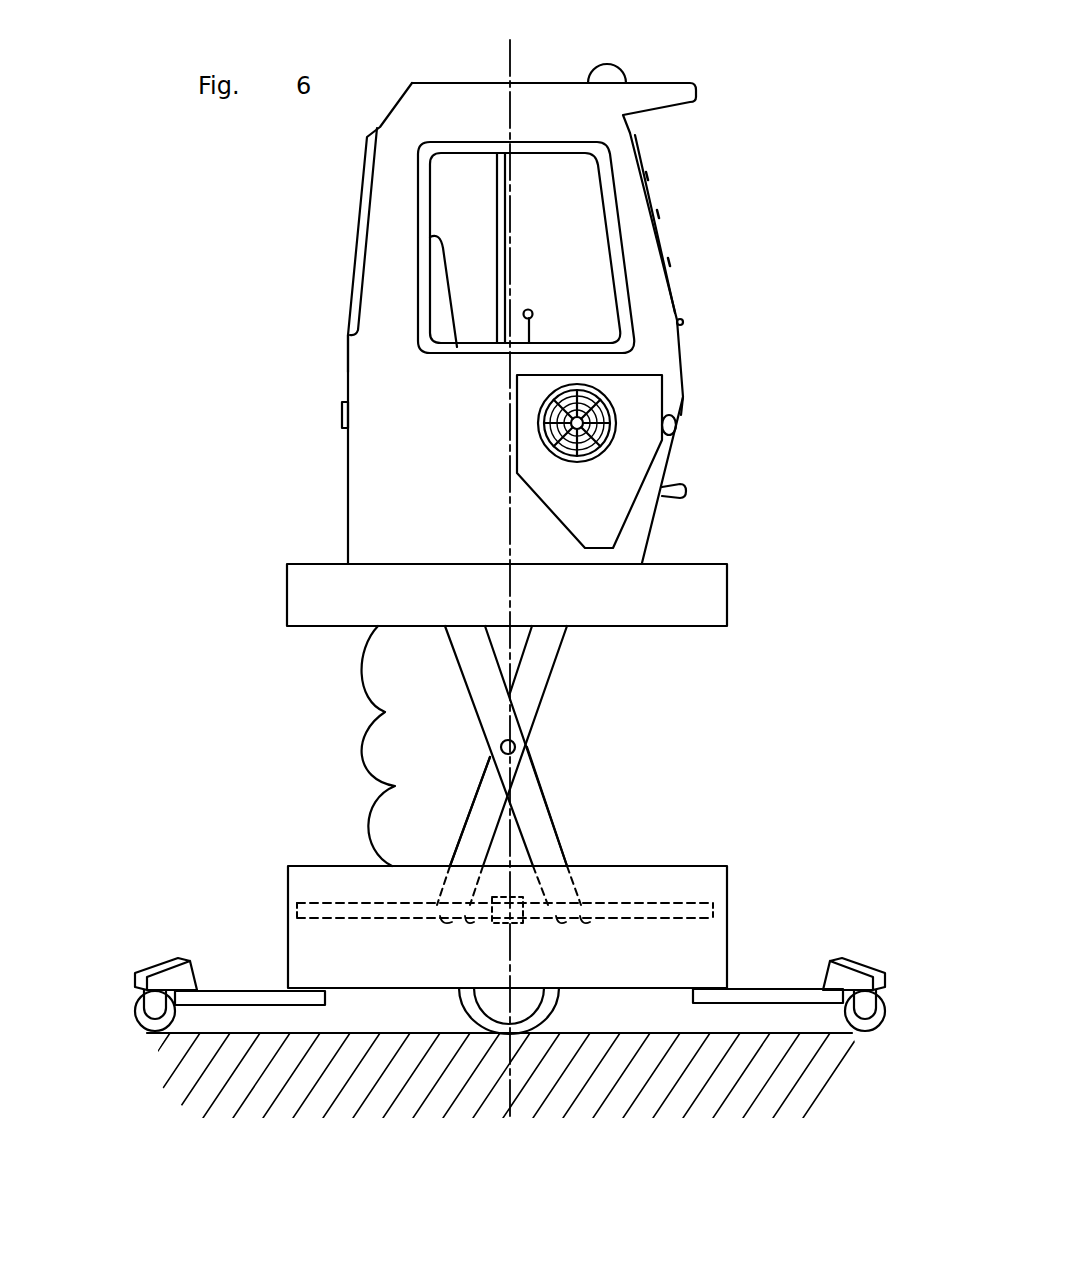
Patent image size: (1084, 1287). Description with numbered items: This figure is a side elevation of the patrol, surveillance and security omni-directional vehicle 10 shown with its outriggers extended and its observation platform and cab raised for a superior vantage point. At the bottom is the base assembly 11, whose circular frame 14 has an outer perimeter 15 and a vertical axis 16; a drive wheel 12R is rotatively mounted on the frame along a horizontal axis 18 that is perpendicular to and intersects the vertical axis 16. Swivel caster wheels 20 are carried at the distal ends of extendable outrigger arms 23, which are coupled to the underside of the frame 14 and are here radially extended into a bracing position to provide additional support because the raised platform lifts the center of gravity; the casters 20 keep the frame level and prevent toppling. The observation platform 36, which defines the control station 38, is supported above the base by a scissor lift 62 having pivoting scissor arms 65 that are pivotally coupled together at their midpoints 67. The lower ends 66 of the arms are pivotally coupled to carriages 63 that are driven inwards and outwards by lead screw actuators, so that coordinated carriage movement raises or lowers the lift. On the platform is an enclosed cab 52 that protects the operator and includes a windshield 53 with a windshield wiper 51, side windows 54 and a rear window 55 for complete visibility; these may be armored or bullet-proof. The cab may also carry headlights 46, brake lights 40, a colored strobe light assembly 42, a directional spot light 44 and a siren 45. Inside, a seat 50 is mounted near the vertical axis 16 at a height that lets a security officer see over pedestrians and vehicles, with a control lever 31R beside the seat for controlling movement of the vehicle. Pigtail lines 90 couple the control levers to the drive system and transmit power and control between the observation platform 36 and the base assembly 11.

The omni-directional vehicle 10 is at (216, 345).
The base assembly 11 is at (727, 882).
The drive wheel 12R is at (553, 1006).
The frame 14 is at (727, 902).
The outer perimeter 15 is at (288, 884).
The vertical axis 16 is at (511, 936).
The horizontal axis 18 is at (511, 990).
The swivel caster wheel 20 is at (136, 998).
The outrigger arm 23 is at (240, 988).
The control lever 31R is at (533, 323).
The observation platform 36 is at (727, 592).
The control station 38 is at (588, 249).
The brake lights 40 is at (342, 413).
The colored strobe light assembly 42 is at (617, 80).
The directional spot light 44 is at (678, 432).
The siren 45 is at (690, 493).
The headlights 46 is at (686, 412).
The seat 50 is at (443, 248).
The windshield wiper 51 is at (668, 284).
The cab 52 is at (348, 371).
The windshield 53 is at (647, 165).
The side windows 54 is at (543, 152).
The rear window 55 is at (355, 190).
The scissor lift 62 is at (548, 808).
The carriage 63 is at (448, 907).
The scissor arm 65 is at (460, 836).
The lower end 66 is at (448, 928).
The midpoint 67 is at (517, 749).
The pigtail lines 90 is at (380, 737).